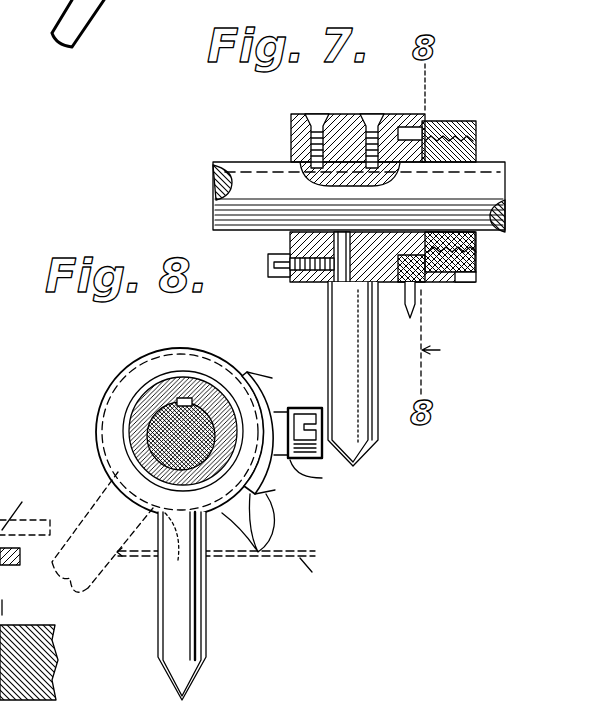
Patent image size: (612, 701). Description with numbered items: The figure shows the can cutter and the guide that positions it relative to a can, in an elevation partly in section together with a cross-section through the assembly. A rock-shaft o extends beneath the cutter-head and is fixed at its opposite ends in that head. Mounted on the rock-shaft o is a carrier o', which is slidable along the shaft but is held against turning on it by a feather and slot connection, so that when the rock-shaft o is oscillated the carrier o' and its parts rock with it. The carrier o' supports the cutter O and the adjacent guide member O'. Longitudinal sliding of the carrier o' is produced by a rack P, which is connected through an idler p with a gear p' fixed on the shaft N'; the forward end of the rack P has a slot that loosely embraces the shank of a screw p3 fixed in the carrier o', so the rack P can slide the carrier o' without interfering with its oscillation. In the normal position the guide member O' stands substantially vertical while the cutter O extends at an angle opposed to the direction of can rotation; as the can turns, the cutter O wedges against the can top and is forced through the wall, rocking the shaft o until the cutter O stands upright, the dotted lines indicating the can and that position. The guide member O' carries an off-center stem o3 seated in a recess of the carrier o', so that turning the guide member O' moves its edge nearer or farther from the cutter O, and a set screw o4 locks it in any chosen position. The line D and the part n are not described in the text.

In FIG. 7, the rock-shaft o is at (336, 197).
In FIG. 8, the rock-shaft o is at (123, 433).
In FIG. 7, the carrier o' is at (358, 198).
In FIG. 8, the carrier o' is at (169, 450).
In FIG. 7, the stem o3 is at (345, 245).
In FIG. 7, the set screw o4 is at (275, 280).
In FIG. 7, the cutter O is at (435, 300).
In FIG. 8, the cutter O is at (216, 546).
In FIG. 7, the guide member O' is at (380, 374).
In FIG. 8, the guide member O' is at (174, 606).
In FIG. 8, the screw p3 is at (298, 418).
In FIG. 8, the rack P is at (311, 482).
In FIG. 8, the line D is at (321, 588).
In FIG. 8, the part n is at (25, 509).
In FIG. 7, the gear p' is at (52, 41).
In FIG. 7, the idler p is at (10, 99).
In FIG. 7, the shaft N' is at (21, 196).